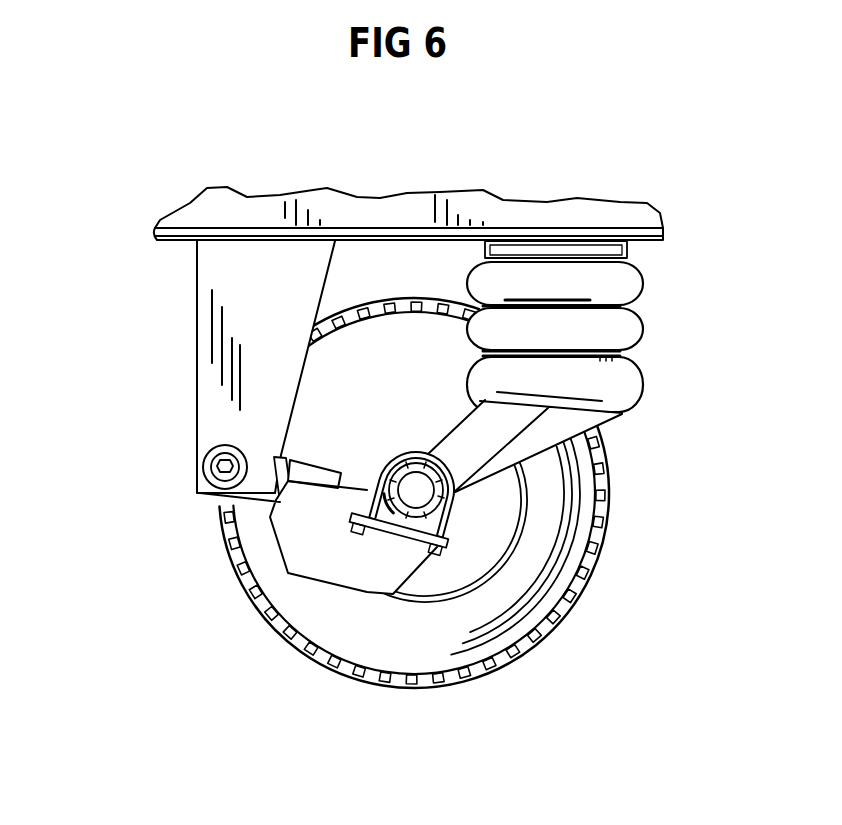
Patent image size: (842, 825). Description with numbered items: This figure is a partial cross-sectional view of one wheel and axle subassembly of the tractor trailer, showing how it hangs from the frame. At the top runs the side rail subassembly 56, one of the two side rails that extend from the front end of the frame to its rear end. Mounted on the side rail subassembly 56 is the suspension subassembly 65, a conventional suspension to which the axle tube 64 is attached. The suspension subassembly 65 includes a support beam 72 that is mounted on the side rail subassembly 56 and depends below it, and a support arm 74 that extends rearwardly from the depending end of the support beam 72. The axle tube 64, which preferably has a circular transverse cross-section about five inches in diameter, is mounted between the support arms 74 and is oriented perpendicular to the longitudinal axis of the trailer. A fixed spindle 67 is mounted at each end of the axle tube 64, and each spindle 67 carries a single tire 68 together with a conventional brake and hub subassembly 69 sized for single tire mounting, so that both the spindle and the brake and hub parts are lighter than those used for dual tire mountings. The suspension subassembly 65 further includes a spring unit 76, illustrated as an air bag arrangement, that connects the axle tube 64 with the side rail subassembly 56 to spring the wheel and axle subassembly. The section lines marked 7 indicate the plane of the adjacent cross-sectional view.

The section line 7- 7 is at (744, 262).
The first side rail subassembly 56 is at (650, 220).
The axle tube 64 is at (440, 550).
The suspension subassembly 65 is at (192, 410).
The fixed spindle 67 is at (417, 492).
The tire 68 is at (597, 483).
The brake and hub subassembly 69 is at (428, 583).
The support beam 72 is at (204, 354).
The support arm 74 is at (312, 542).
The spring unit 76 is at (652, 334).